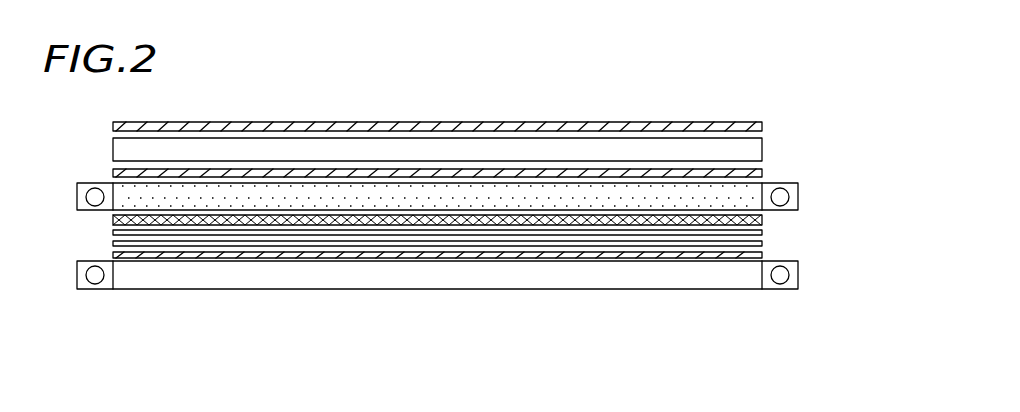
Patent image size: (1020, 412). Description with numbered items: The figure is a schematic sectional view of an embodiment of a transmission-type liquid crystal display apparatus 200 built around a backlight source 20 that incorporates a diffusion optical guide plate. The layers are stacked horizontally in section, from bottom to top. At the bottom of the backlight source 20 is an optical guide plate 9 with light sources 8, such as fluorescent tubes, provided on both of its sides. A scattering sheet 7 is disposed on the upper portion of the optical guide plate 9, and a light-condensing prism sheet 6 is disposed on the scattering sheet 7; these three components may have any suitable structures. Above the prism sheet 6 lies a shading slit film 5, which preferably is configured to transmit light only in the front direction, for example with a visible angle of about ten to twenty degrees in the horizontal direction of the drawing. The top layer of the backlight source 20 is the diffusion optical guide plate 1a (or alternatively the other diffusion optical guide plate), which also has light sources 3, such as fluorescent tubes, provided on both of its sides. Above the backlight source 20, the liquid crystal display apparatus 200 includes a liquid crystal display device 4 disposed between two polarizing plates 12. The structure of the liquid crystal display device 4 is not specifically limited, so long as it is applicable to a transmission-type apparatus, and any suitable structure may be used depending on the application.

The liquid crystal display apparatus 200 is at (838, 119).
The diffusion optical guide plate 1a is at (756, 186).
The polarizing plate 12 is at (142, 123).
The liquid crystal display device 4 is at (113, 149).
The backlight source 20 is at (873, 172).
The light source 3 is at (94, 197).
The shading slit film 5 is at (762, 214).
The light-condensing prism sheet 6 is at (762, 243).
The scattering sheet 7 is at (762, 253).
The optical guide plate 9 is at (742, 278).
The light source 8 is at (94, 275).